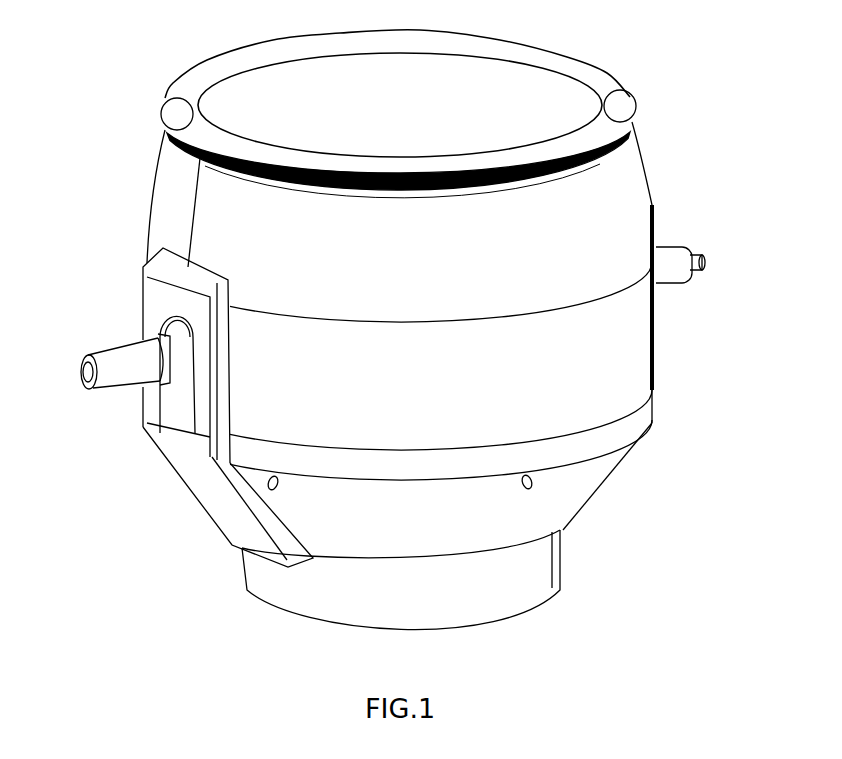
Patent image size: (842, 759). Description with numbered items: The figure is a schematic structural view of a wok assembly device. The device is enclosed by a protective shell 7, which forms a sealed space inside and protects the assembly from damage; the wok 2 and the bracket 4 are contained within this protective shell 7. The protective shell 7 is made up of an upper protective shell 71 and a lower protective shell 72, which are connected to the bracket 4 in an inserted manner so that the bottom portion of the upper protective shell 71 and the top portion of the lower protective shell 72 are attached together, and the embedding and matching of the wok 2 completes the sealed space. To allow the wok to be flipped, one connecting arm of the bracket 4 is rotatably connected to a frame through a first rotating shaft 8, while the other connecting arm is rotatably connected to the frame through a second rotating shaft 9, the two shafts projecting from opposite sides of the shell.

The wok 2 is at (588, 78).
The bracket 4 is at (430, 198).
The protective shell 7 is at (468, 376).
The upper protective shell 71 is at (598, 380).
The lower protective shell 72 is at (600, 487).
The first rotating shaft 8 is at (130, 360).
The second rotating shaft 9 is at (678, 260).